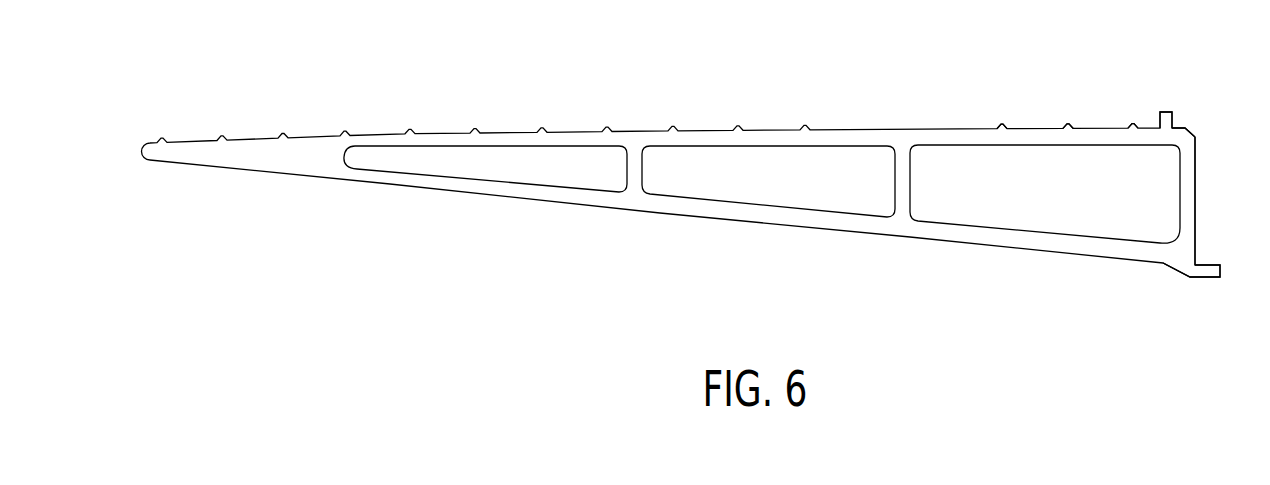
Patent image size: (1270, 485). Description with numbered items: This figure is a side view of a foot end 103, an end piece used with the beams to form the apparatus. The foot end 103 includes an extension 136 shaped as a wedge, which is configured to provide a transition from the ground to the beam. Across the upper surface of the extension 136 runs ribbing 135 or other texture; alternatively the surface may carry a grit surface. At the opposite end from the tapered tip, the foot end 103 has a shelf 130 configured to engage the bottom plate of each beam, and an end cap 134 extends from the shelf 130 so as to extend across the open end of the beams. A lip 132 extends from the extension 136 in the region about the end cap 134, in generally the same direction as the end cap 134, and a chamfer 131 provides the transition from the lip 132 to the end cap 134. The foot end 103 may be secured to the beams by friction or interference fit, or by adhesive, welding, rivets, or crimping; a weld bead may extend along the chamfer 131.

The foot end 103 is at (650, 90).
The shelf 130 is at (1208, 274).
The chamfer 131 is at (1195, 135).
The lip 132 is at (1160, 110).
The end cap 134 is at (1190, 191).
The ribbing 135 is at (992, 118).
The extension 136 is at (652, 162).